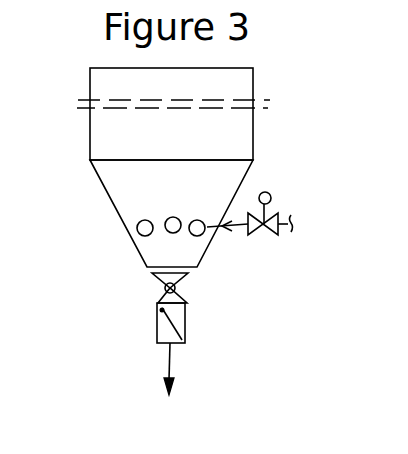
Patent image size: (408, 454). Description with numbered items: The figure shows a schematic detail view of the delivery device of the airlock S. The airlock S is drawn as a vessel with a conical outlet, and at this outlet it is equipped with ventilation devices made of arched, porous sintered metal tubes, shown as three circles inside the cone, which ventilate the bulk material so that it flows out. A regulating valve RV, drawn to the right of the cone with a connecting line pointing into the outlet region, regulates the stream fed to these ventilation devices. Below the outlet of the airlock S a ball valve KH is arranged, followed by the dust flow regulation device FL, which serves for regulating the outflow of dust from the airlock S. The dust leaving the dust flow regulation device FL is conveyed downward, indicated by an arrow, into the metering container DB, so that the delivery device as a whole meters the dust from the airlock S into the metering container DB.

The airlock S is at (173, 167).
The regulating valve RV is at (250, 227).
The ball valve KH is at (166, 290).
The dust flow regulation device FL is at (172, 328).
The metering container DB is at (160, 388).